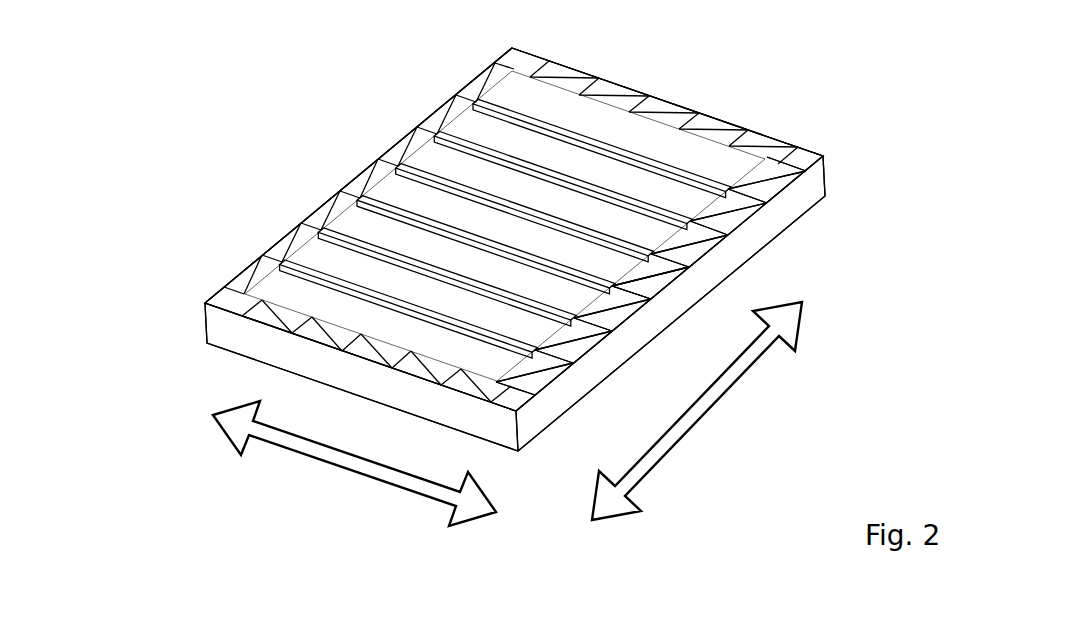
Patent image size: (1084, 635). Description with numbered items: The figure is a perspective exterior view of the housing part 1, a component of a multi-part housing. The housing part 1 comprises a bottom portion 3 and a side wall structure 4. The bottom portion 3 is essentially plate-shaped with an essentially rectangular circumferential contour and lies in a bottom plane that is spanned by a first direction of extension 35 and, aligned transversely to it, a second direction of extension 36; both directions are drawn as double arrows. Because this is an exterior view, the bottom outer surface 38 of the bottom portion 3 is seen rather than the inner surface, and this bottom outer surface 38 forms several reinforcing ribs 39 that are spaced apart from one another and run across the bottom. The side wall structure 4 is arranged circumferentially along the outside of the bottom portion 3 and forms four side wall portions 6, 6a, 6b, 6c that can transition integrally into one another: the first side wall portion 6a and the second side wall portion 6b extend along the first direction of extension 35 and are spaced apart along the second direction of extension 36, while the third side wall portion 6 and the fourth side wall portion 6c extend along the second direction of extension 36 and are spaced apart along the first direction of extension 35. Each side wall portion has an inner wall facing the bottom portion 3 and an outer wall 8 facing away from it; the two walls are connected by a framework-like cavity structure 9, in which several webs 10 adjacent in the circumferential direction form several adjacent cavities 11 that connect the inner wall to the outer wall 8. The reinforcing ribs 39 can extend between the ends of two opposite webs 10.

The housing part 1 is at (86, 33).
The bottom portion 3 is at (603, 127).
The bottom outer surface 38 is at (603, 127).
The side wall structure 4 is at (128, 225).
The third side wall portion 6 is at (607, 91).
The first side wall portion 6a is at (610, 311).
The second side wall portion 6b is at (310, 233).
The fourth side wall portion 6c is at (347, 332).
The outer wall 8 is at (797, 197).
The cavity structure 9 is at (857, 213).
The web 10 is at (698, 237).
The cavity 11 is at (640, 292).
The first direction of extension 35 is at (787, 323).
The second direction of extension 36 is at (250, 432).
The reinforcing rib 39 is at (663, 166).